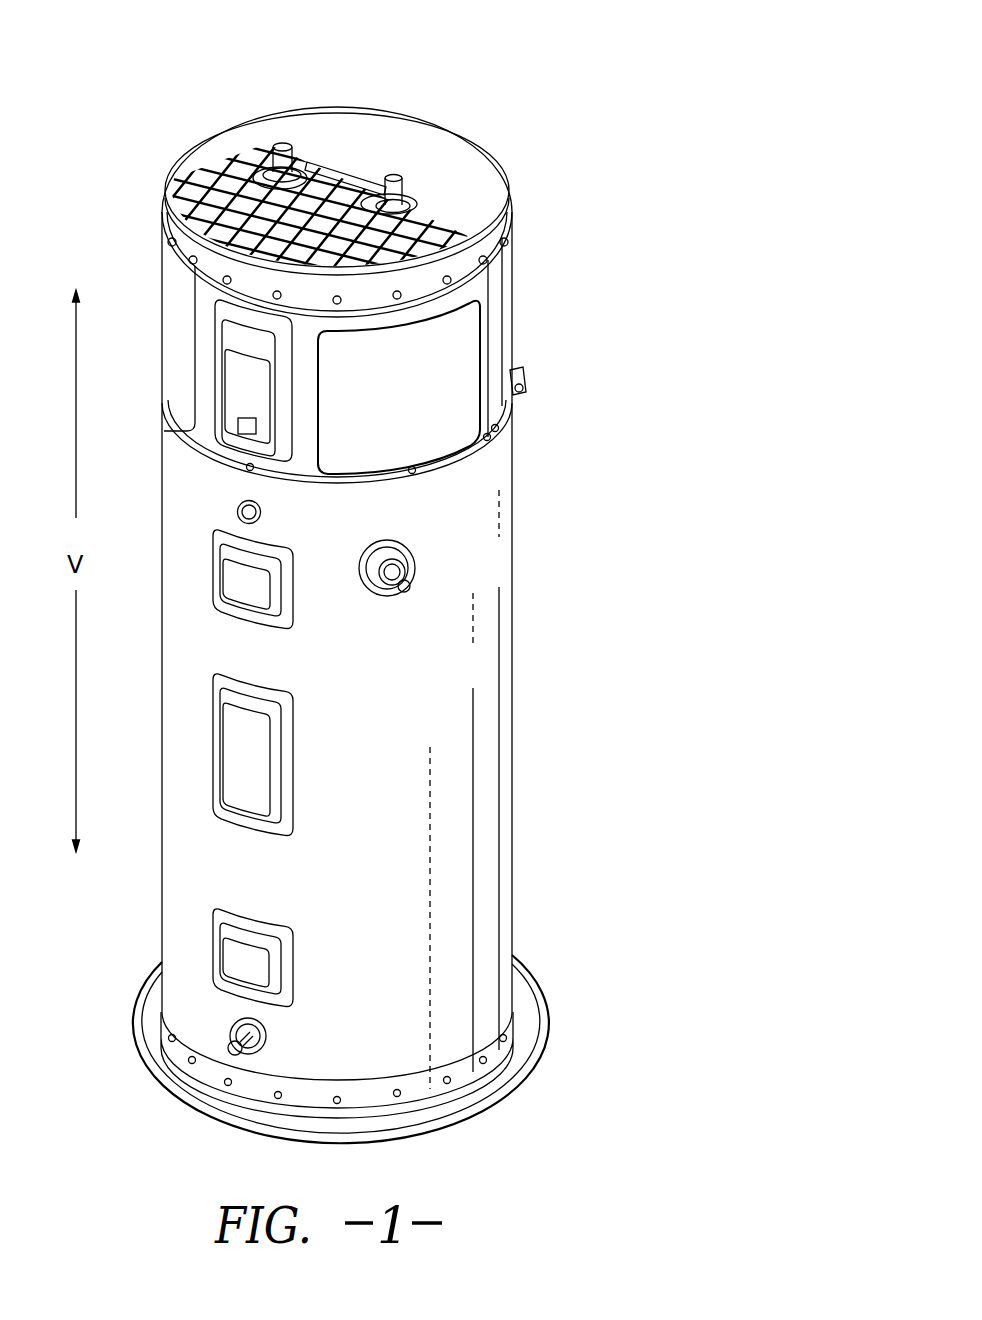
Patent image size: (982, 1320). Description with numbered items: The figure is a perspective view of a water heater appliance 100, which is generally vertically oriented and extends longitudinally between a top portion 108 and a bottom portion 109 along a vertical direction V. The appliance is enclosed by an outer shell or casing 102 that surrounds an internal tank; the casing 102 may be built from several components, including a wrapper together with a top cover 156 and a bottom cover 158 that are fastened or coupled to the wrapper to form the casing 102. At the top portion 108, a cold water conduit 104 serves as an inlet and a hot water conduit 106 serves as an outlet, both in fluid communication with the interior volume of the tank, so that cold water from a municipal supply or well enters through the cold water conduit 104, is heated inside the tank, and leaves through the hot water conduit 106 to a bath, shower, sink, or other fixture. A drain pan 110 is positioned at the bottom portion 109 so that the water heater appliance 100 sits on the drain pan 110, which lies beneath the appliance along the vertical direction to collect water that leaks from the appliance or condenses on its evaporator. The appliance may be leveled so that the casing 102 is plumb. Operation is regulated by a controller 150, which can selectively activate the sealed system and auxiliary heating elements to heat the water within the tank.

The water heater appliance 100 is at (409, 515).
The casing 102 is at (487, 563).
The cold water conduit 104 is at (400, 188).
The hot water conduit 106 is at (276, 153).
The top portion 108 is at (145, 186).
The bottom portion 109 is at (118, 1006).
The drain pan 110 is at (566, 1014).
The controller 150 is at (480, 668).
The top cover 156 is at (506, 190).
The bottom cover 158 is at (462, 1070).